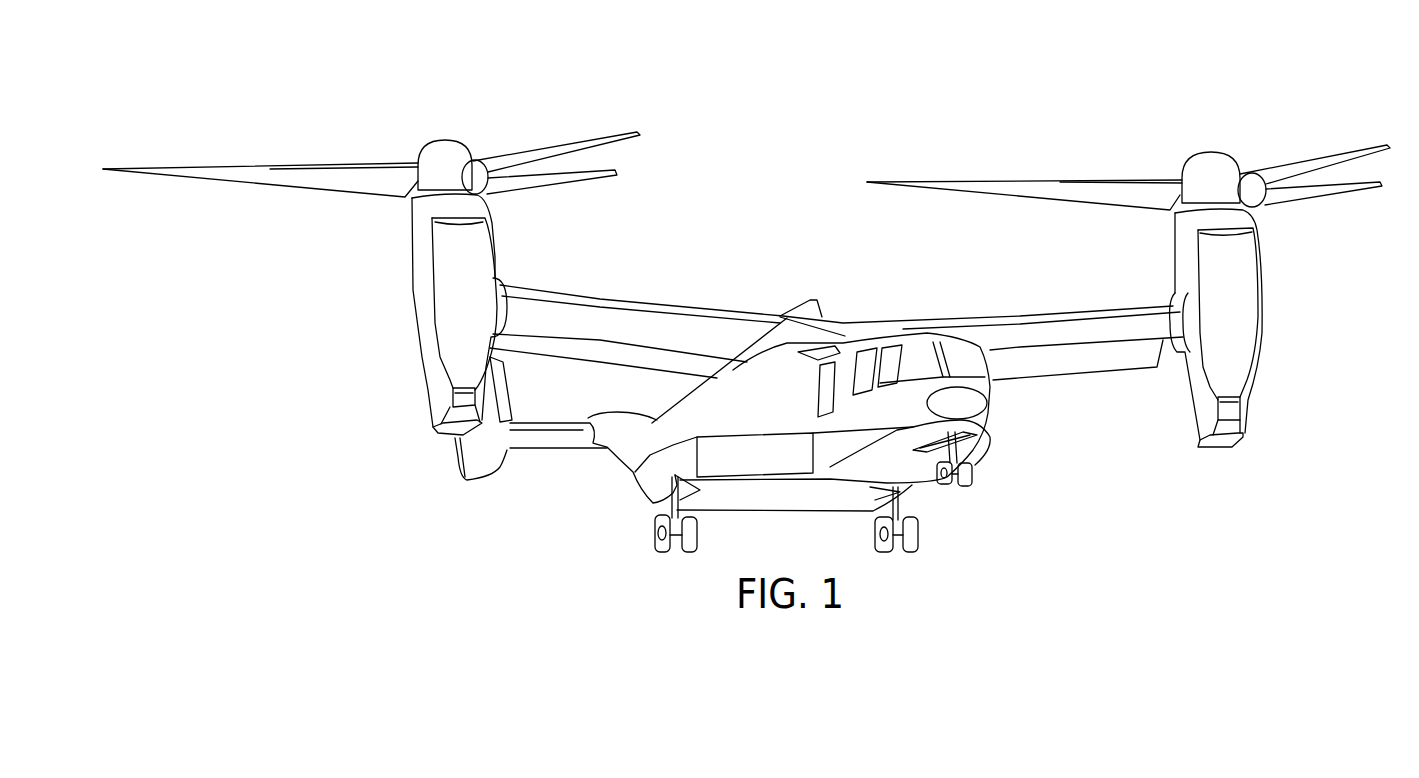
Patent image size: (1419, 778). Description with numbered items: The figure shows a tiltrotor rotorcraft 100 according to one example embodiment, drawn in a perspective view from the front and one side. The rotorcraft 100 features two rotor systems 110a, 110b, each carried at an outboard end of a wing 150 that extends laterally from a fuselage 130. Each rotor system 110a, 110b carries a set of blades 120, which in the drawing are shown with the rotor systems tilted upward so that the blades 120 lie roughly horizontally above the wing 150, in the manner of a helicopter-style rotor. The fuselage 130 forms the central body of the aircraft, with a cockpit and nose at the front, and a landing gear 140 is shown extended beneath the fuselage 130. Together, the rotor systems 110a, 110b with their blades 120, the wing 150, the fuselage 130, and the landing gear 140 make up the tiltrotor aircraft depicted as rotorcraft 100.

The rotorcraft 100 is at (846, 104).
The rotor system 110a is at (408, 375).
The rotor system 110b is at (1265, 400).
The blades 120 is at (270, 167).
The fuselage 130 is at (992, 418).
The landing gear 140 is at (655, 540).
The wing 150 is at (645, 298).